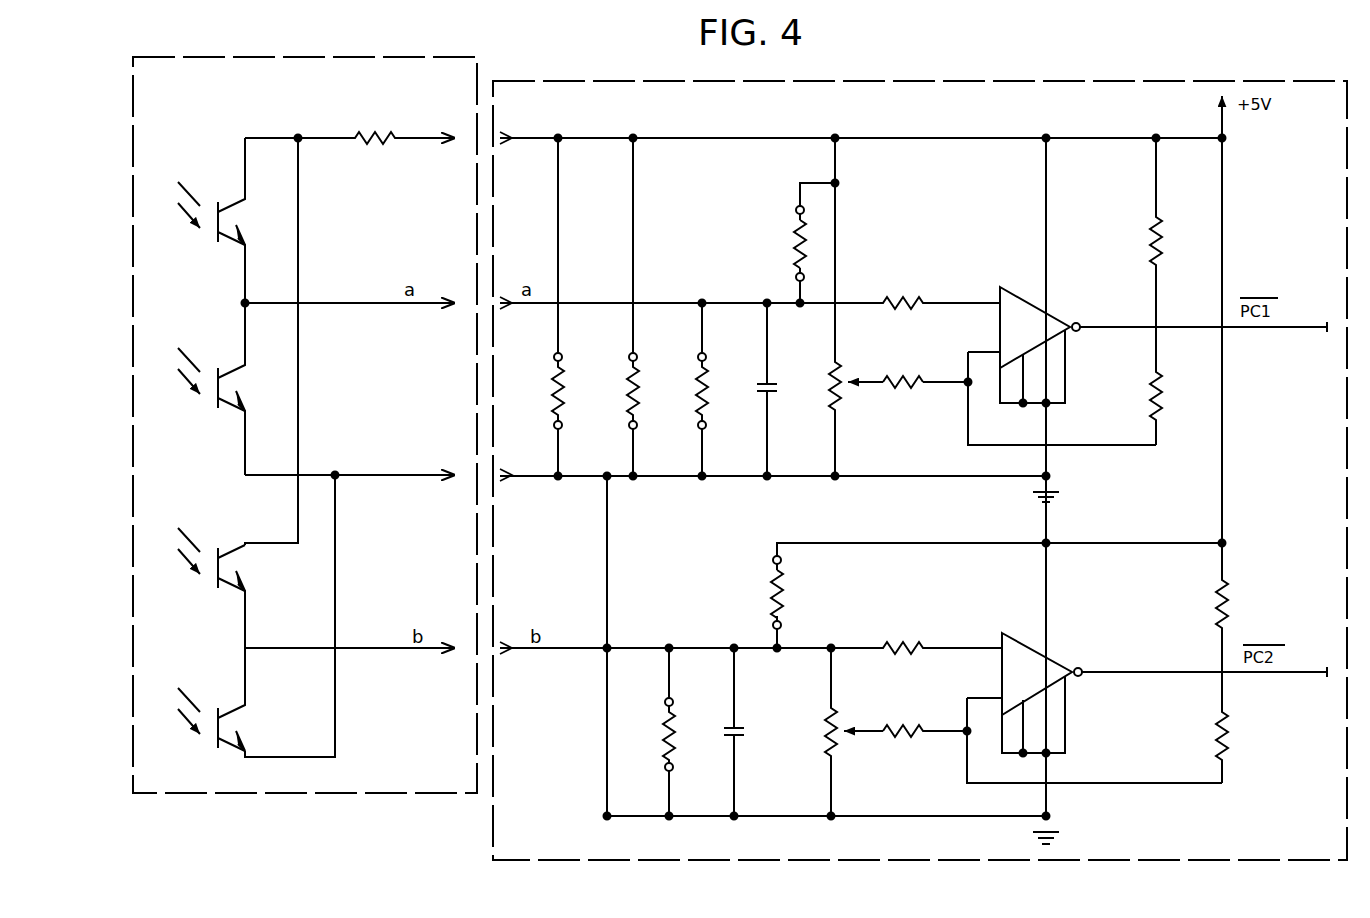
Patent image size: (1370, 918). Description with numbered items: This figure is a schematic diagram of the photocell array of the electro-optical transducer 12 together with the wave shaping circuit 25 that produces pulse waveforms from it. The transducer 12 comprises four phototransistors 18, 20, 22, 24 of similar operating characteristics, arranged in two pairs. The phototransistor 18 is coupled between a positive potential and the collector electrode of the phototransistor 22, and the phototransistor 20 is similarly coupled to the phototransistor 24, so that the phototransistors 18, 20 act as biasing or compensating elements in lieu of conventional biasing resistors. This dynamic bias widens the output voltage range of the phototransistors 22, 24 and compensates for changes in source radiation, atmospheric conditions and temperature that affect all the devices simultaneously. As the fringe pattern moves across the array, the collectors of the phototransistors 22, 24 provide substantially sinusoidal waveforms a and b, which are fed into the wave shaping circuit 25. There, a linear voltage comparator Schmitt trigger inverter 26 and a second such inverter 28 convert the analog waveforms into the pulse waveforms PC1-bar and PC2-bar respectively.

The transducer 12 is at (400, 57).
The phototransistor 18 is at (232, 198).
The phototransistor 22 is at (232, 364).
The phototransistor 20 is at (232, 544).
The phototransistor 24 is at (232, 704).
The wave shaping circuit 25 is at (1030, 81).
The linear voltage comparator Schmitt trigger inverter 26 is at (1020, 292).
The linear voltage comparator Schmitt trigger inverter 28 is at (1020, 638).